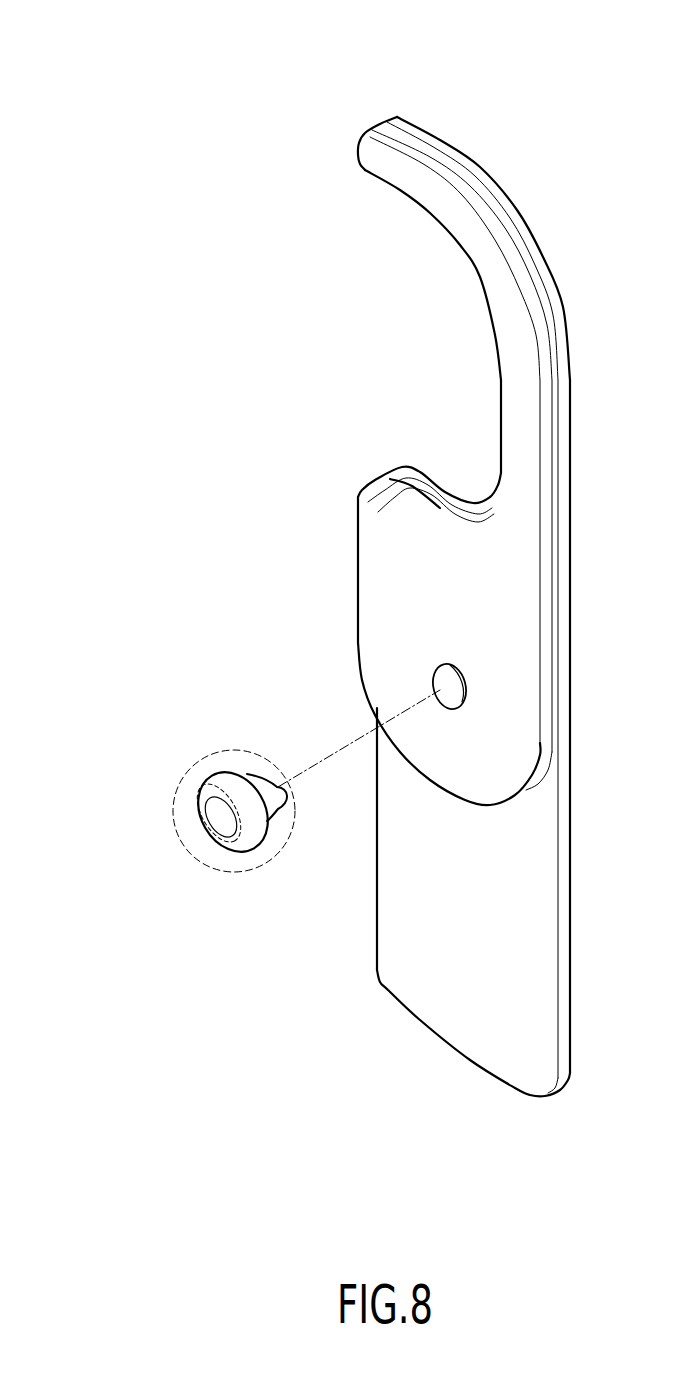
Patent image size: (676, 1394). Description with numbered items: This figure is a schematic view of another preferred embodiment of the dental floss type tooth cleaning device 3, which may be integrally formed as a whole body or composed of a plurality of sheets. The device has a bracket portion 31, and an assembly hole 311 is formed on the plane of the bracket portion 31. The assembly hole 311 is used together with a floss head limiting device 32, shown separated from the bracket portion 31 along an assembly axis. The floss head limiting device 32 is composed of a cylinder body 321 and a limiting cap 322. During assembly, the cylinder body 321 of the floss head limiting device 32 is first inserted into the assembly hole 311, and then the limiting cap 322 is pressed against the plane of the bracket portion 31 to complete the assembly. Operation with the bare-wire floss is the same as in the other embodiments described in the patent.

The dental floss type tooth cleaning device 3 is at (186, 35).
The bracket portion 31 is at (383, 580).
The assembly hole 311 is at (442, 680).
The floss head limiting device 32 is at (195, 765).
The cylinder body 321 is at (283, 805).
The limiting cap 322 is at (222, 818).